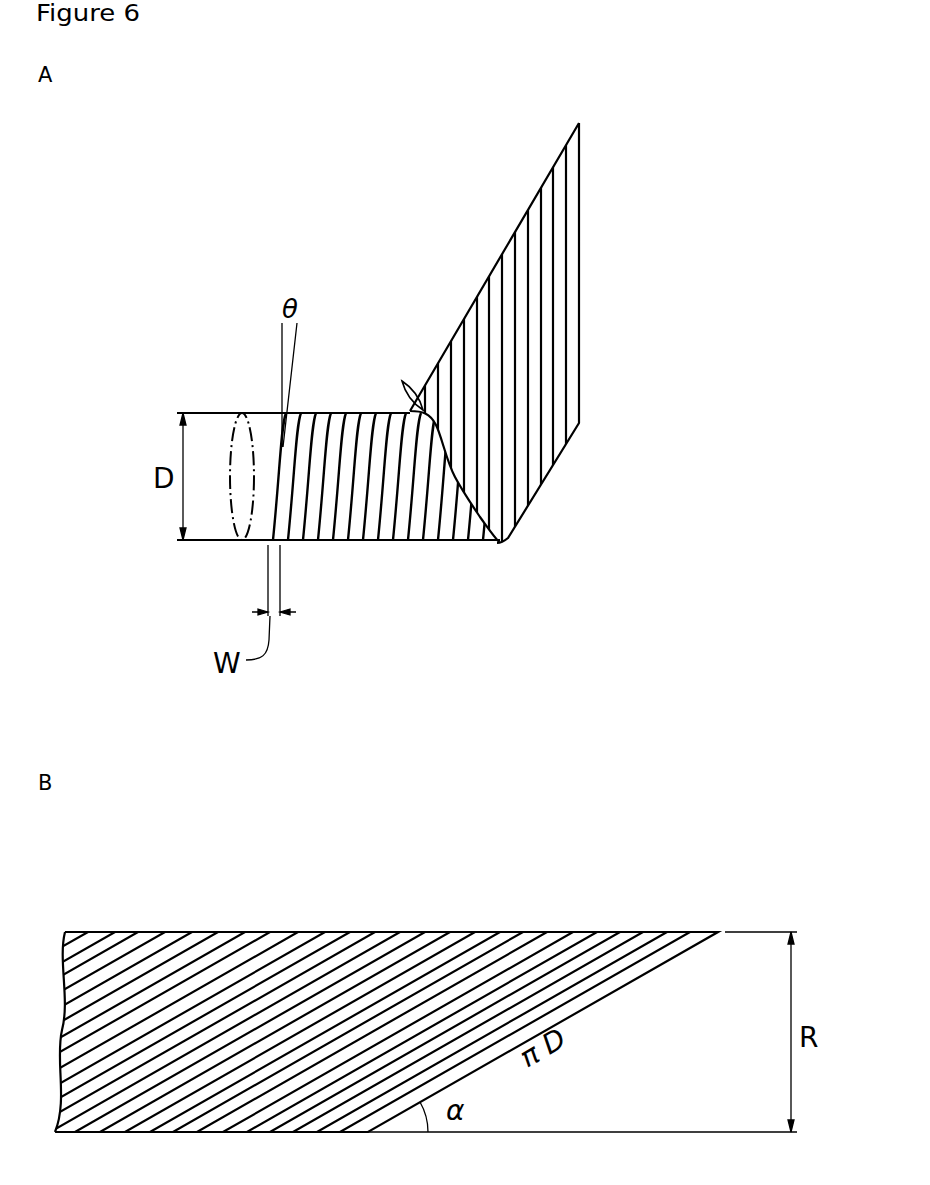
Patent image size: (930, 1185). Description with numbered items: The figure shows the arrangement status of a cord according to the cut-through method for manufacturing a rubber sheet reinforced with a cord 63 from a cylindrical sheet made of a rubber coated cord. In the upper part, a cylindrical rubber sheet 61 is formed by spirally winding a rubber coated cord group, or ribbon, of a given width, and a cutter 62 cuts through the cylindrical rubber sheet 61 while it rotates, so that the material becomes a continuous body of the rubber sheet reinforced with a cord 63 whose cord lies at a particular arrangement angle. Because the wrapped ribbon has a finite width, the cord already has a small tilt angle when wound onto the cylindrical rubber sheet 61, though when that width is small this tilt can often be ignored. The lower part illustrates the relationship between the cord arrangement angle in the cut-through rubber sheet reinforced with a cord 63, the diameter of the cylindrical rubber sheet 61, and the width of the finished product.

The cylindrical rubber sheet 61 is at (360, 545).
The cutter 62 is at (402, 381).
The rubber sheet reinforced with a cord 63 is at (257, 930).